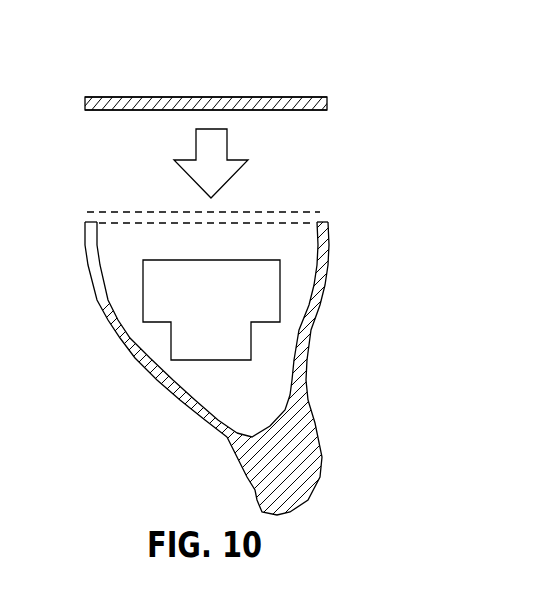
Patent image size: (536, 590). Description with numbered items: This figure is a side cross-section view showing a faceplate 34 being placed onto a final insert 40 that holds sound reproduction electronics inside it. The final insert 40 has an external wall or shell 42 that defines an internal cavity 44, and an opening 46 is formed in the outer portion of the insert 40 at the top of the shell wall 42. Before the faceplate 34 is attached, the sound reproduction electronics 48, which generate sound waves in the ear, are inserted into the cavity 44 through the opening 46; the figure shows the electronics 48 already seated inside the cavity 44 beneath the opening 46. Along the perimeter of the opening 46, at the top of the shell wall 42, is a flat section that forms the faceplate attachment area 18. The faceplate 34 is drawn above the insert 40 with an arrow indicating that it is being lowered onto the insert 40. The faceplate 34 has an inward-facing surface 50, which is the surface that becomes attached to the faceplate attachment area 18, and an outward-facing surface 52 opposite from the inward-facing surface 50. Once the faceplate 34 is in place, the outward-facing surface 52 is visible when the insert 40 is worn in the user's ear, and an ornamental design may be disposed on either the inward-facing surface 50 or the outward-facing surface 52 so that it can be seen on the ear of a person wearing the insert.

The faceplate 34 is at (367, 83).
The outward-facing surface 52 is at (95, 97).
The inward-facing surface 50 is at (95, 110).
The final insert 40 is at (367, 292).
The external wall or shell 42 is at (90, 272).
The internal cavity 44 is at (278, 367).
The faceplate attachment area 18 is at (85, 222).
The opening 46 is at (245, 232).
The sound reproduction electronics 48 is at (273, 297).